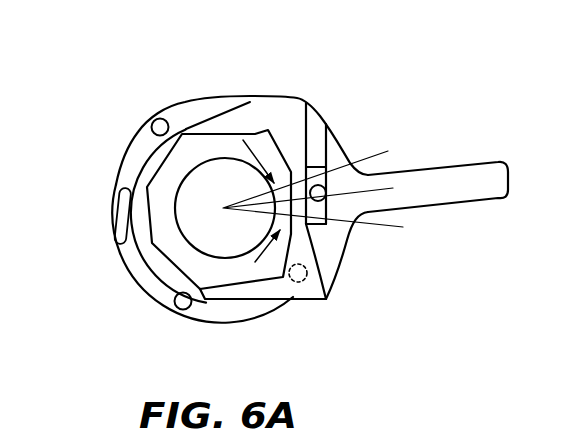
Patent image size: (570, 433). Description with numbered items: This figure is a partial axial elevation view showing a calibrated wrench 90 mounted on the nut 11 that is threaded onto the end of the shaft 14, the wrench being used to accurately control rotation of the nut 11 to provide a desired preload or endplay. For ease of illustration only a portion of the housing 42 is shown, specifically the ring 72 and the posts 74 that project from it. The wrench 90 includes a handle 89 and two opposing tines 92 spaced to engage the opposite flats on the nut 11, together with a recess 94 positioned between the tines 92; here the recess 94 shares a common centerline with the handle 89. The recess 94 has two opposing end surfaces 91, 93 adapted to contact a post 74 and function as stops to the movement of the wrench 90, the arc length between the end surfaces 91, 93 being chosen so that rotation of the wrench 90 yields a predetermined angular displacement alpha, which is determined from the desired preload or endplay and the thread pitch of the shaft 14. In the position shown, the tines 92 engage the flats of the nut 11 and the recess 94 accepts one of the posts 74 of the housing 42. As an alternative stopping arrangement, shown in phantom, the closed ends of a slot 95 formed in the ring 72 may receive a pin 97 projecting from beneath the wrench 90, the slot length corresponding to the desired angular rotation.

The housing 42 is at (104, 98).
The post 74 is at (160, 119).
The tine 92 is at (202, 125).
The wrench 90 is at (427, 103).
The end surface 91 is at (317, 166).
The recess 94 is at (317, 166).
The handle 89 is at (464, 168).
The slot 95 is at (120, 217).
The shaft 14 is at (210, 243).
The end surface 93 is at (324, 230).
The nut 11 is at (167, 255).
The ring 72 is at (211, 322).
The pin 97 is at (305, 282).